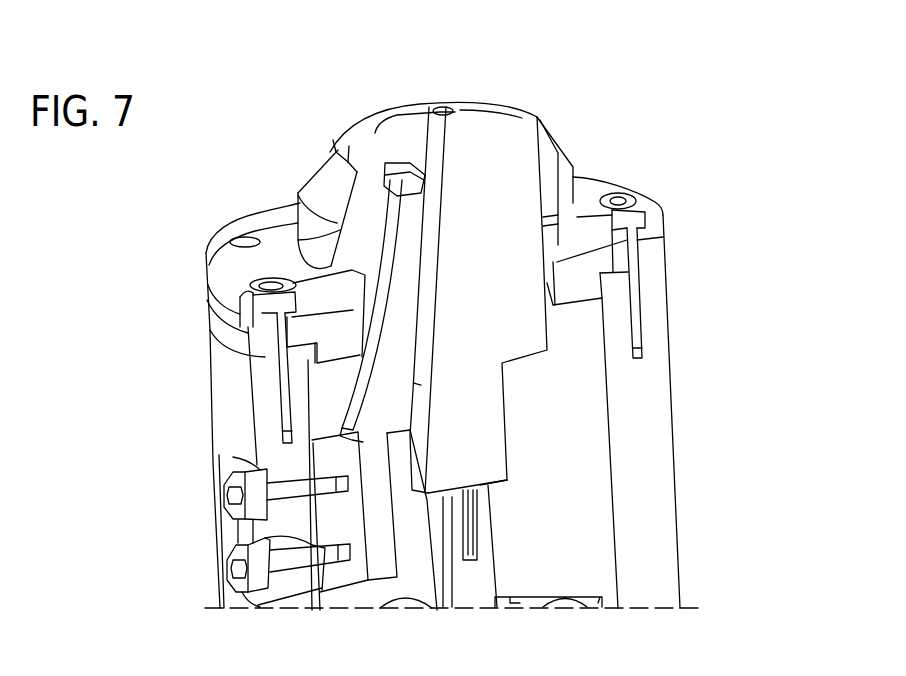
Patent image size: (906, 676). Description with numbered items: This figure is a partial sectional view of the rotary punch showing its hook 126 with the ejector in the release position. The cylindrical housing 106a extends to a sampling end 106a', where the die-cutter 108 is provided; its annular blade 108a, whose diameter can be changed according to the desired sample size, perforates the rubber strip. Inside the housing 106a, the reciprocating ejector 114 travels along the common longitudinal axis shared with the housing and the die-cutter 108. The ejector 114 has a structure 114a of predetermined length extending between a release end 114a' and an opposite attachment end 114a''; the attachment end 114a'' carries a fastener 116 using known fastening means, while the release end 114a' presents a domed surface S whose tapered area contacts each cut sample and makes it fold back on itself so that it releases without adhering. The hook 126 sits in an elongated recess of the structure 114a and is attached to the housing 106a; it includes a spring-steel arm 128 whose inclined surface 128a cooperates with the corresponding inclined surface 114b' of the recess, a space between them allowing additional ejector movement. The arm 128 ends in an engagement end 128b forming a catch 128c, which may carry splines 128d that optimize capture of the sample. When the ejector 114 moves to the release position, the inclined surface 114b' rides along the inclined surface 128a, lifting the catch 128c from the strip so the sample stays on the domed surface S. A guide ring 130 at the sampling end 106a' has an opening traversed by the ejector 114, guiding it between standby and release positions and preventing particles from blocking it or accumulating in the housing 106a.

The housing 106a is at (500, 392).
The sampling end 106a' is at (656, 406).
The die-cutter 108 is at (217, 280).
The annular blade 108a is at (345, 168).
The reciprocating ejector 114 is at (522, 158).
The structure 114a is at (624, 189).
The release end 114a' is at (486, 77).
The attachment end 114a'' is at (632, 515).
The inclined surface 114b' is at (449, 255).
The fastener 116 is at (492, 565).
The hook 126 is at (383, 380).
The arm 128 is at (300, 242).
The inclined surface 128a is at (420, 403).
The engagement end 128b is at (393, 202).
The catch 128c is at (380, 150).
The spline 128d is at (402, 160).
The guide ring 130 is at (262, 348).
The domed surface S is at (465, 107).